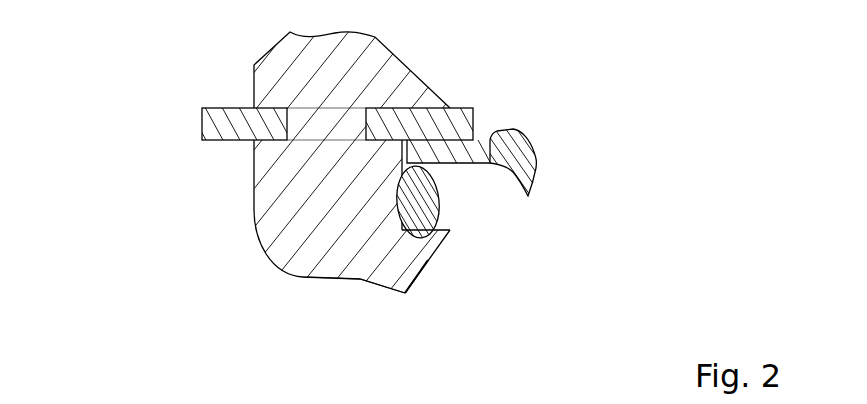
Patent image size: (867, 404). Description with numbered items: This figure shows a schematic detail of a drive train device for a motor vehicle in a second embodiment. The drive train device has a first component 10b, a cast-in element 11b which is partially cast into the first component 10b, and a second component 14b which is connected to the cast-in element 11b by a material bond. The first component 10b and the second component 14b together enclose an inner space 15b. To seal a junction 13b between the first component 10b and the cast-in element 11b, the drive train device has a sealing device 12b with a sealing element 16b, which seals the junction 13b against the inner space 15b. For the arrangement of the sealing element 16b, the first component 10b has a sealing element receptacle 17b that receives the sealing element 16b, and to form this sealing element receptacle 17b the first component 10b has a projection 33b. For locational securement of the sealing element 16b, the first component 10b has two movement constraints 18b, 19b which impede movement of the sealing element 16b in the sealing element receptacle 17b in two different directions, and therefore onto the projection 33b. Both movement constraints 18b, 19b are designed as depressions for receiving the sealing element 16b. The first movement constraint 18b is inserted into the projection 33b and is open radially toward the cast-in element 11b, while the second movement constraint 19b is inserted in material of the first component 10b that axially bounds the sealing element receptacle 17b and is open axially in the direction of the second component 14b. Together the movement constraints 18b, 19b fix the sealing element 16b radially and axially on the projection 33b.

The first component 10b is at (297, 177).
The cast-in element 11b is at (202, 115).
The sealing device 12b is at (462, 211).
The junction 13b is at (279, 97).
The second component 14b is at (534, 162).
The inner space 15b is at (460, 247).
The sealing element 16b is at (447, 221).
The sealing element receptacle 17b is at (452, 180).
The first movement constraint 18b is at (423, 242).
The second movement constraint 19b is at (397, 207).
The projection 33b is at (426, 265).